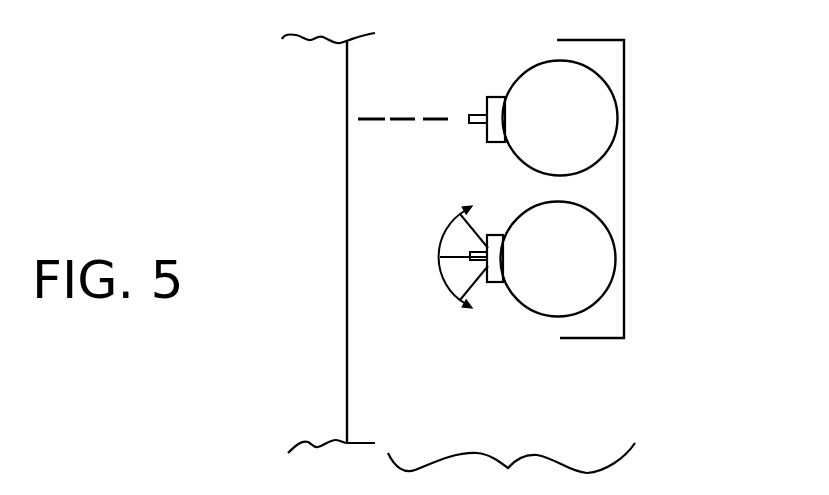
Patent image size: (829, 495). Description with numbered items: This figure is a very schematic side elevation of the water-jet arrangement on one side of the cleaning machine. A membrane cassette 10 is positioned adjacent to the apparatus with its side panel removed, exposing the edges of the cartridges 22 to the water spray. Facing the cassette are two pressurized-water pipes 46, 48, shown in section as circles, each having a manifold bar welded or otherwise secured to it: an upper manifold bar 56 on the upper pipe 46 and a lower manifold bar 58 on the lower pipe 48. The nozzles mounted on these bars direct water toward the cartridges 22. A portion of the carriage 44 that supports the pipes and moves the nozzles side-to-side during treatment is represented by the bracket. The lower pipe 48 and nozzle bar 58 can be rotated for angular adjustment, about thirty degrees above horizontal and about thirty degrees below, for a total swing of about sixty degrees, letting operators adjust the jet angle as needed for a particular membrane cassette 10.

The membrane cassette 10 is at (358, 390).
The cartridges 22 is at (347, 343).
The carriage 44 is at (623, 307).
The pipe 46 is at (603, 82).
The pipe 48 is at (603, 223).
The upper manifold bar 56 is at (497, 96).
The lower manifold bar 58 is at (497, 282).